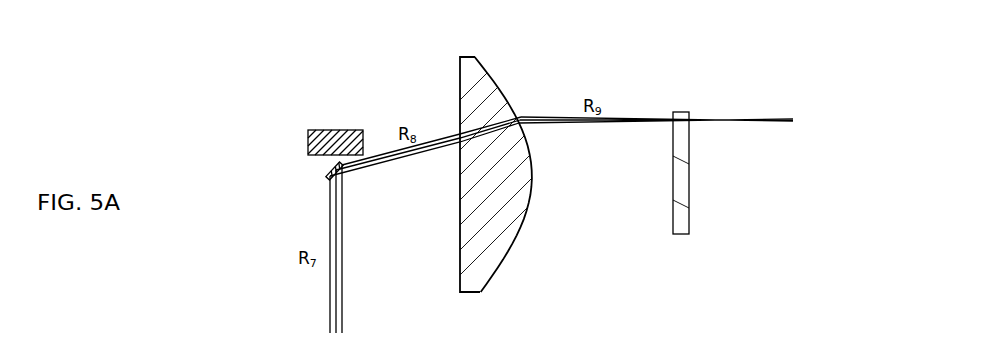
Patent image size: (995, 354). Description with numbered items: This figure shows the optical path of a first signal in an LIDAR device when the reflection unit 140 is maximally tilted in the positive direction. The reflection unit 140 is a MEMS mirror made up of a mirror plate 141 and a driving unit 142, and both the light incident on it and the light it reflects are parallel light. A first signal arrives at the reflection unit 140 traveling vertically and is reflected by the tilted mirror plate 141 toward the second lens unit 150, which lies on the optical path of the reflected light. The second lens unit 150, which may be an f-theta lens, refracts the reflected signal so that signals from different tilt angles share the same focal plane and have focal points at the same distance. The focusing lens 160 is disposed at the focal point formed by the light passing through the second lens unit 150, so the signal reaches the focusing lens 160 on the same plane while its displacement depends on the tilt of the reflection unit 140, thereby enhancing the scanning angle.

The reflection unit 140 is at (252, 125).
The mirror plate 141 is at (325, 178).
The driving unit 142 is at (308, 137).
The second lens unit 150 is at (468, 56).
The focusing lens 160 is at (676, 112).